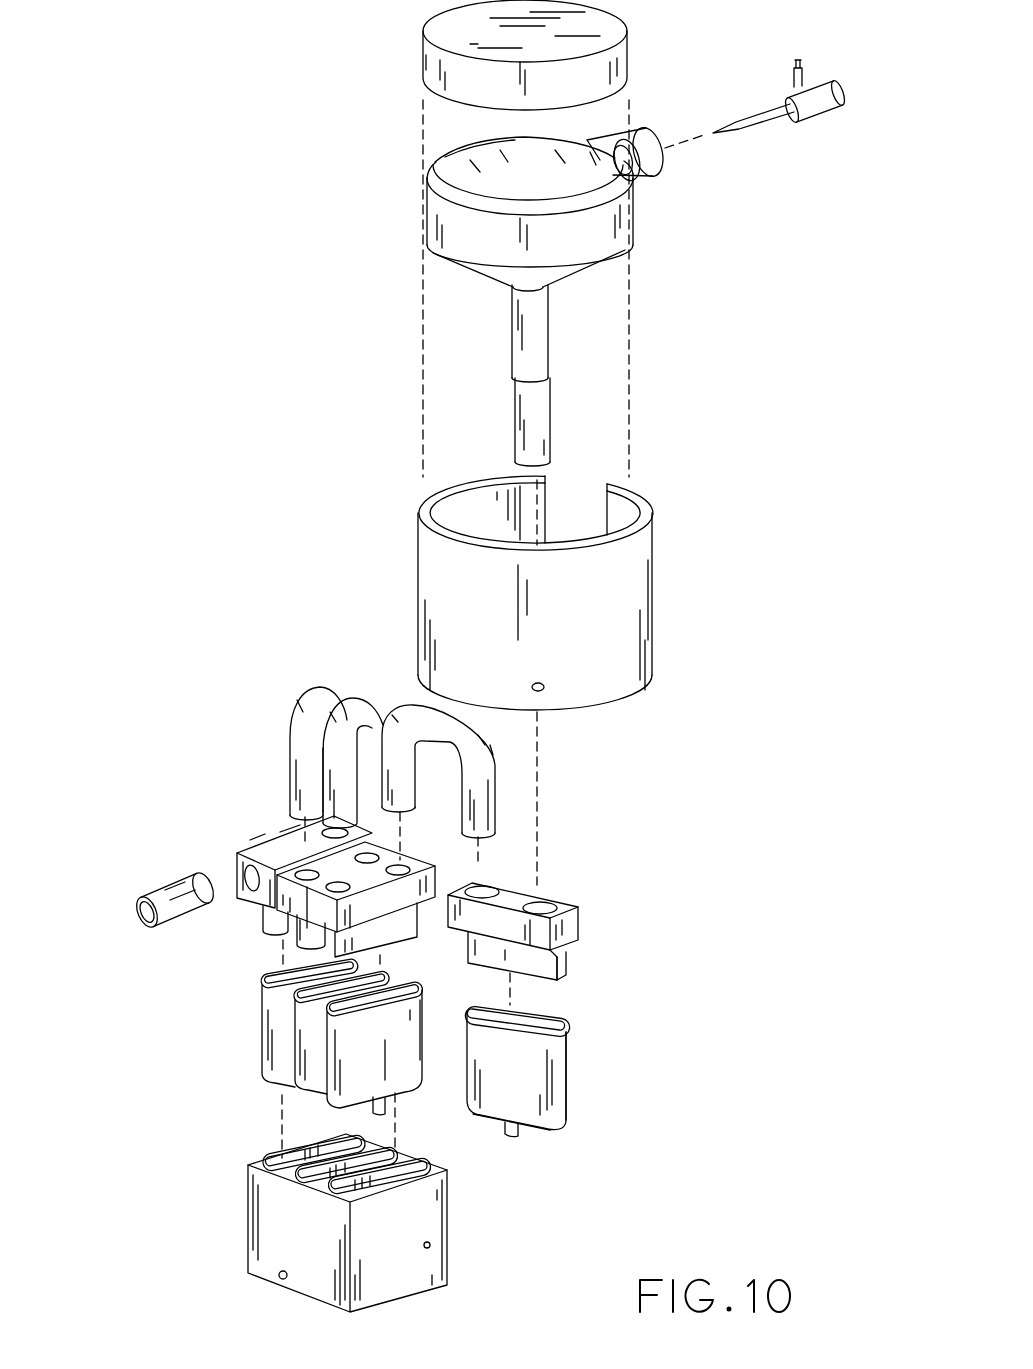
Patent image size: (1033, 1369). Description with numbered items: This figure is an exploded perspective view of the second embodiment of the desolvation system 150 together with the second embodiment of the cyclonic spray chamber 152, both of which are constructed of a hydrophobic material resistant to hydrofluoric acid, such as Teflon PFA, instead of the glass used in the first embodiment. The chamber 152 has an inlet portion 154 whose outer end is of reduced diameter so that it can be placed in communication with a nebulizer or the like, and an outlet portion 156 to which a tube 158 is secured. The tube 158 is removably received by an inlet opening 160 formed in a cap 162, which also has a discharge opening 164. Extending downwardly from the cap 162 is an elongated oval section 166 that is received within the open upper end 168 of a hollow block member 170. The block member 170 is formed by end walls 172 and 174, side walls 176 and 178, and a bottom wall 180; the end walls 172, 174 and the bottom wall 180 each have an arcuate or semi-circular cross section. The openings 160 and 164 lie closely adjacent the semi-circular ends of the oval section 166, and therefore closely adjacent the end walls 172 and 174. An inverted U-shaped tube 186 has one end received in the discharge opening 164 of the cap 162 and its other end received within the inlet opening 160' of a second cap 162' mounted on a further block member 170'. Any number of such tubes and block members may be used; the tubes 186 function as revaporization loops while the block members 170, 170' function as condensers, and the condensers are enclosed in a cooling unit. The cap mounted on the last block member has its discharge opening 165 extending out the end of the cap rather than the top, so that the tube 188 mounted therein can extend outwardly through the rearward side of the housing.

The desolvation system 150 is at (438, 656).
The cyclonic spray chamber 152 is at (613, 217).
The inlet portion 154 is at (605, 140).
The outlet portion 156 is at (538, 310).
The tube 158 is at (543, 413).
The inlet opening 160 is at (570, 898).
The inlet opening 160' is at (302, 766).
The cap 162 is at (593, 956).
The cap 162' is at (292, 924).
The discharge opening 164 is at (488, 887).
The discharge opening 165 is at (240, 868).
The elongated oval section 166 is at (555, 962).
The open upper end 168 is at (560, 1022).
The hollow block member 170 is at (580, 1076).
The block member 170' is at (274, 1054).
The end wall 172 is at (465, 1013).
The end wall 174 is at (567, 1042).
The side wall 176 is at (523, 1102).
The side wall 178 is at (518, 1013).
The bottom wall 180 is at (547, 1128).
The inverted U-shaped tube 186 is at (485, 738).
The tube 188 is at (150, 926).